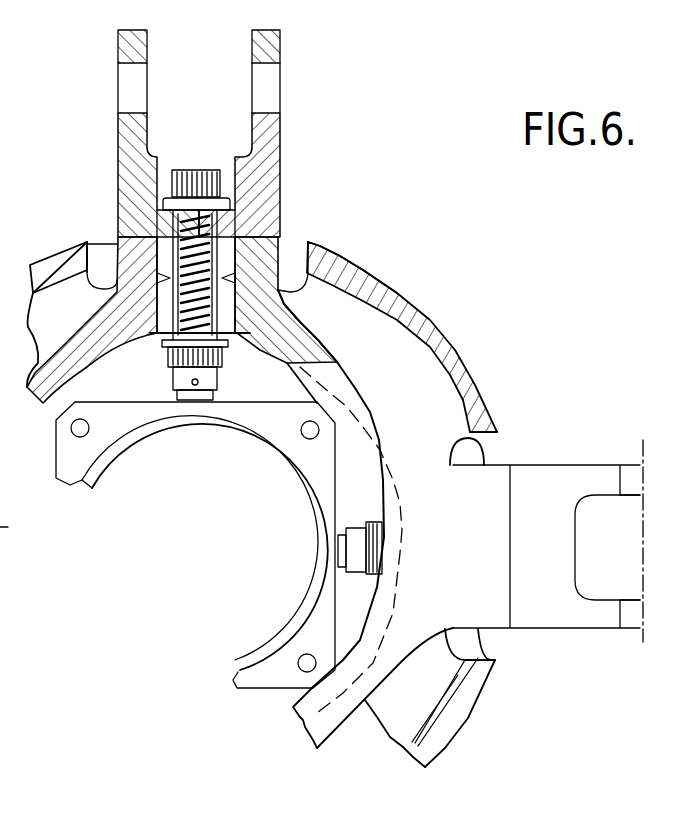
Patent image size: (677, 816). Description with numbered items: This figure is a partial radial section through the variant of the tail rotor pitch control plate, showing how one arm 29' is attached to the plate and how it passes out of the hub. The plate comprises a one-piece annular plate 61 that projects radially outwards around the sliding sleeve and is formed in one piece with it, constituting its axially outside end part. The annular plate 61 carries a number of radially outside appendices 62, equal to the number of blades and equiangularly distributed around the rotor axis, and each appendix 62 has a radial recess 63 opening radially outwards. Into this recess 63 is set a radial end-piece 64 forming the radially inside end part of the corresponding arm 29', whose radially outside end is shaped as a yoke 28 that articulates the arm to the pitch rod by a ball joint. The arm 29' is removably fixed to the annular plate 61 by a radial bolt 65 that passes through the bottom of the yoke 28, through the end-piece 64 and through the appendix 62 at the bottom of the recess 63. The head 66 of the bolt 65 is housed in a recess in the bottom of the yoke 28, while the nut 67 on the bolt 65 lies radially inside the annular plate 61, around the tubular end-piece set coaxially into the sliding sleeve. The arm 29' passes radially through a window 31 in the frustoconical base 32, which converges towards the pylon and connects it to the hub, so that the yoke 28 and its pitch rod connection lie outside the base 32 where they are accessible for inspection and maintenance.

The yoke 28 is at (283, 43).
The arm 29' is at (252, 175).
The window 31 is at (295, 267).
The frustoconical base 32 is at (440, 352).
The annular plate 61 is at (387, 430).
The appendix 62 is at (87, 242).
The radial recess 63 is at (127, 253).
The radial end-piece 64 is at (215, 277).
The radial bolt 65 is at (190, 247).
The head of the bolt 66 is at (200, 178).
The nut 67 is at (196, 385).